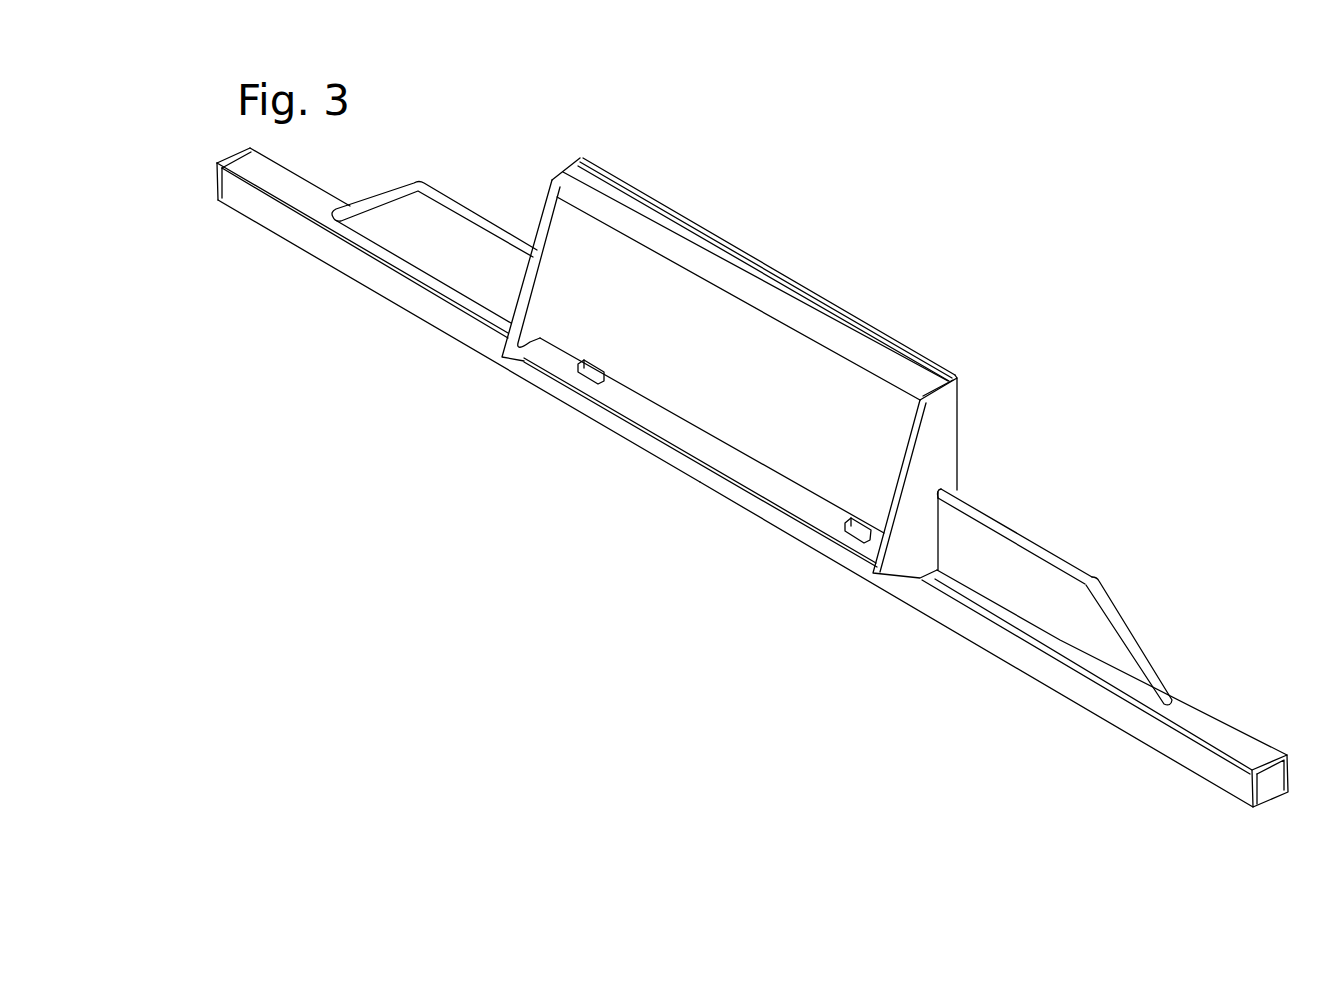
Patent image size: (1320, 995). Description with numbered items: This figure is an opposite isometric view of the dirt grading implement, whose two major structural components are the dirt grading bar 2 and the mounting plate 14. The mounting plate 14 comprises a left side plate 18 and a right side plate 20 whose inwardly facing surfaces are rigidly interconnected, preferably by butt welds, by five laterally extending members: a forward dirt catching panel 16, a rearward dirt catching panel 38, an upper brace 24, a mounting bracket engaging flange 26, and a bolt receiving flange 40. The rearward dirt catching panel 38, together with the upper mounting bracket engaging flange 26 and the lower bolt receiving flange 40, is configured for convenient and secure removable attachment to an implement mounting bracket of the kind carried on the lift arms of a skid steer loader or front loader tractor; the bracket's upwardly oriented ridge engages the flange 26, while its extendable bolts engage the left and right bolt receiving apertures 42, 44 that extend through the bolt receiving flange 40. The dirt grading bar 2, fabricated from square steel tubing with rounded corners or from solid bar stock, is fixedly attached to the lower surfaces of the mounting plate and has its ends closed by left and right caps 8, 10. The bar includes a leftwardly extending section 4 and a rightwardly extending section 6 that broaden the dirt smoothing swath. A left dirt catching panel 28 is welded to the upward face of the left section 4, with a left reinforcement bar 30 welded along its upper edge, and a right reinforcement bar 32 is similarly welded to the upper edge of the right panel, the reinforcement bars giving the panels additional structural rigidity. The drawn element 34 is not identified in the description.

The dirt grading bar 2 is at (744, 519).
The leftwardly extending section 4 is at (392, 288).
The rightwardly extending section 6 is at (993, 633).
The left cap 8 is at (247, 148).
The right cap 10 is at (1254, 787).
The mounting plate 14 is at (789, 247).
The forward dirt catching panel 16 is at (702, 225).
The left side plate 18 is at (515, 340).
The right side plate 20 is at (930, 457).
The upper brace 24 is at (603, 190).
The mounting bracket engaging flange 26 is at (822, 343).
The left dirt catching panel 28 is at (476, 260).
The left reinforcement bar 30 is at (437, 192).
The right reinforcement bar 32 is at (1073, 605).
The right flange 34 is at (1034, 547).
The rearward dirt catching panel 38 is at (675, 370).
The bolt receiving flange 40 is at (710, 453).
The left bolt receiving aperture 42 is at (586, 373).
The right bolt receiving aperture 44 is at (850, 533).